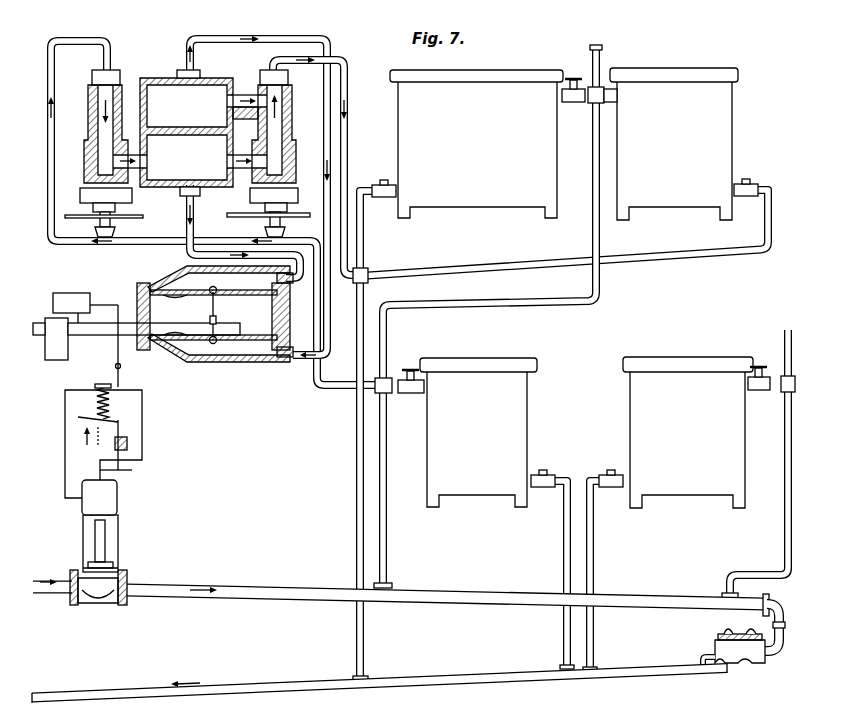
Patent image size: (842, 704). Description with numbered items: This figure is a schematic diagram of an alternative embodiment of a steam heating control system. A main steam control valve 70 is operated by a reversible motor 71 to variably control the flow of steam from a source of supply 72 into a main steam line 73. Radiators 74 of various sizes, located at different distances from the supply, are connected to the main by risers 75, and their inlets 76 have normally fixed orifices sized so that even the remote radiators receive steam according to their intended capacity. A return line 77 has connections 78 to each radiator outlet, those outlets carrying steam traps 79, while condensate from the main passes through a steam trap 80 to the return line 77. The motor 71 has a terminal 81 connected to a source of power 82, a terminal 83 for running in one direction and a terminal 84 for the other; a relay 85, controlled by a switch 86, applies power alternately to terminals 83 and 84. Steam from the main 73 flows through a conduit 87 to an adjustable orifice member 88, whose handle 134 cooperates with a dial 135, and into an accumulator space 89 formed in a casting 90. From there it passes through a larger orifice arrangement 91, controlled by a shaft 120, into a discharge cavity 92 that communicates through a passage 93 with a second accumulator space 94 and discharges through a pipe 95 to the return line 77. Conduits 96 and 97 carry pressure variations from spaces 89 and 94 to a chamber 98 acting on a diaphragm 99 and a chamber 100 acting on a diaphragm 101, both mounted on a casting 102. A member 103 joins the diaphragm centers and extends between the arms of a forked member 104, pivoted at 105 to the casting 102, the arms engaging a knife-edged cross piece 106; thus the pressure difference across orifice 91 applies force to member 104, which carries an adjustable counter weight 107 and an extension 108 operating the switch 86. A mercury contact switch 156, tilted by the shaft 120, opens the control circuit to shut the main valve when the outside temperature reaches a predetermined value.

The main steam control valve 70 is at (102, 600).
The reversible motor 71 is at (118, 513).
The source of supply 72 is at (52, 594).
The main steam line 73 is at (272, 586).
The radiators 74 is at (491, 200).
The risers 75 is at (592, 155).
The radiator inlets 76 is at (576, 80).
The return line 77 is at (263, 682).
The connections 78 is at (364, 248).
The steam traps 79 is at (384, 180).
The steam trap 80 is at (757, 660).
The motor terminal 81 is at (132, 470).
The source of power 82 is at (130, 443).
The motor terminal 83 is at (118, 493).
The motor terminal 84 is at (65, 455).
The relay 85 is at (112, 406).
The switch 86 is at (80, 293).
The conduit 87 is at (60, 243).
The orifice member 88 is at (88, 152).
The accumulator space 89 is at (184, 157).
The casting 90 is at (189, 129).
The orifice arrangement 91 is at (292, 152).
The discharge cavity 92 is at (288, 106).
The passage 93 is at (264, 88).
The accumulator space 94 is at (208, 106).
The pipe 95 is at (346, 66).
The conduit 96 is at (194, 235).
The conduit 97 is at (250, 38).
The chamber 98 is at (229, 322).
The diaphragm 99 is at (162, 307).
The chamber 100 is at (245, 362).
The diaphragm 101 is at (196, 355).
The casting 102 is at (285, 305).
The diaphragm connecting member 103 is at (216, 298).
The forked member 104 is at (122, 362).
The pivot 105 is at (134, 335).
The knife-edged cross piece 106 is at (217, 320).
The adjustable counter weight 107 is at (52, 360).
The extension 108 is at (82, 316).
The shaft 120 is at (240, 213).
The handle 134 is at (116, 233).
The dial 135 is at (125, 214).
The mercury contact switch 156 is at (124, 376).